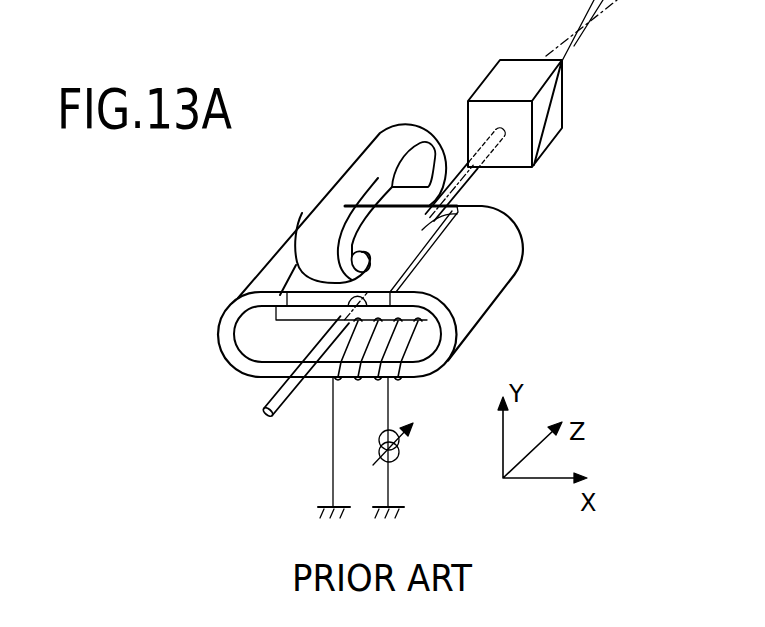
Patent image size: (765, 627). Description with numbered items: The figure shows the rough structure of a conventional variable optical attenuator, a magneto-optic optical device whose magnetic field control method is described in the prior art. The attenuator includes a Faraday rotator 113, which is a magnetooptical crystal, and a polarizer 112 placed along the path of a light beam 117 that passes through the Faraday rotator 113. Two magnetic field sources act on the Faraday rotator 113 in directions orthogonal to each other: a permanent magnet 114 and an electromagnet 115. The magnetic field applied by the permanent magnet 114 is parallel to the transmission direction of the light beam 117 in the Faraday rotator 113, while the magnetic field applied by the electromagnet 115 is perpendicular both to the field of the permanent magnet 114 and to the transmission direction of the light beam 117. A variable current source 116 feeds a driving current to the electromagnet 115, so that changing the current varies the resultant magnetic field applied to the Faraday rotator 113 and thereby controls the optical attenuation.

The polarizer 112 is at (511, 72).
The Faraday rotator 113 is at (458, 211).
The permanent magnet 114 is at (386, 133).
The electromagnet 115 is at (512, 245).
The variable current source 116 is at (397, 457).
The light beam 117 is at (279, 412).